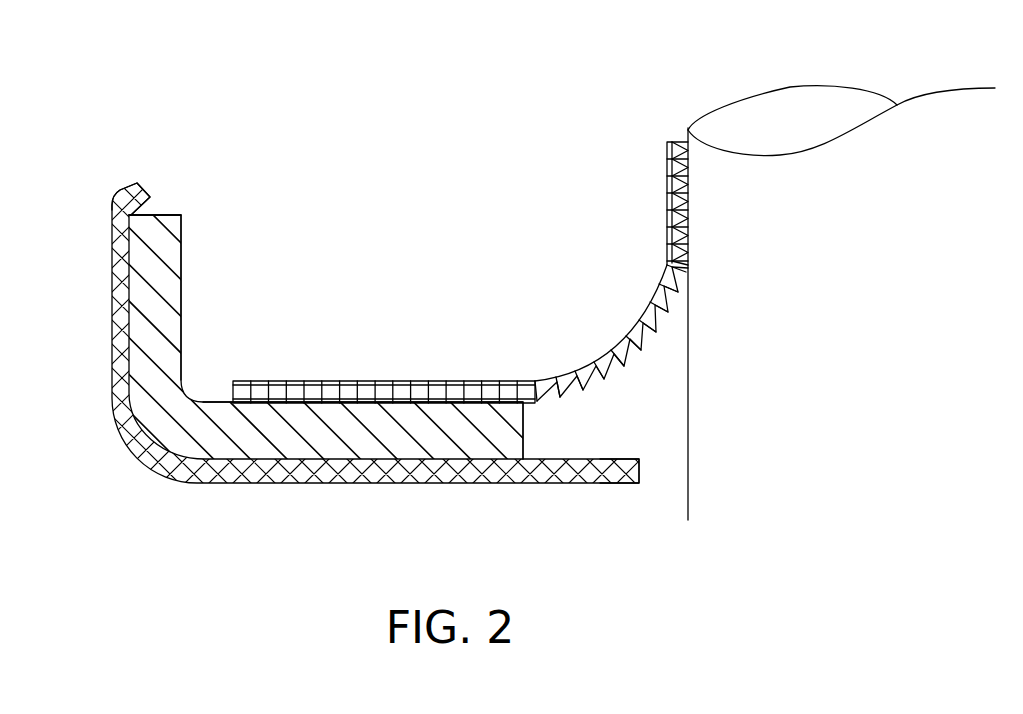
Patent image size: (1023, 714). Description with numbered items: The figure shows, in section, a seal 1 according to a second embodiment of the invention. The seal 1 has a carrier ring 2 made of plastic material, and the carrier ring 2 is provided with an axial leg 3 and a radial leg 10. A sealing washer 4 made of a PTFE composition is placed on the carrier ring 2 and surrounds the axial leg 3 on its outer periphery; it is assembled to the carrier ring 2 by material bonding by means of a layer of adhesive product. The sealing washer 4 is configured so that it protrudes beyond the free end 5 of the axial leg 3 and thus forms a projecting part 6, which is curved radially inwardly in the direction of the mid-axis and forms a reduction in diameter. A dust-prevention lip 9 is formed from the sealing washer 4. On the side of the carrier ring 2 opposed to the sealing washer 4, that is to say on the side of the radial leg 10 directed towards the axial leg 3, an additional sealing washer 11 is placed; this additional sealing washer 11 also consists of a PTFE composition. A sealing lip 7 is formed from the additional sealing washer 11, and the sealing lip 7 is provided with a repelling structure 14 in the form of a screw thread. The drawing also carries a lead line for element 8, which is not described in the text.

The seal 1 is at (417, 79).
The carrier ring 2 is at (170, 252).
The axial leg 3 is at (148, 307).
The sealing washer 4 is at (418, 483).
The free end 5 is at (167, 215).
The projecting part 6 is at (135, 187).
The sealing lip 7 is at (665, 178).
The lid 8 is at (803, 202).
The dust-prevention lip 9 is at (613, 483).
The radial leg 10 is at (322, 440).
The additional sealing washer 11 is at (461, 380).
The repelling structure 14 is at (657, 313).